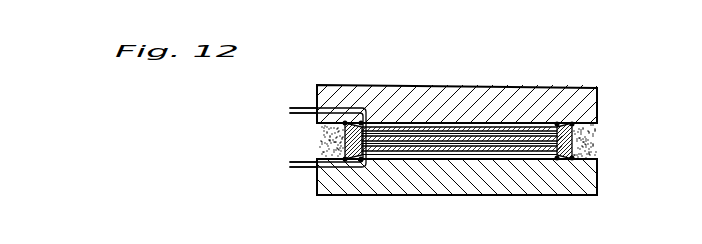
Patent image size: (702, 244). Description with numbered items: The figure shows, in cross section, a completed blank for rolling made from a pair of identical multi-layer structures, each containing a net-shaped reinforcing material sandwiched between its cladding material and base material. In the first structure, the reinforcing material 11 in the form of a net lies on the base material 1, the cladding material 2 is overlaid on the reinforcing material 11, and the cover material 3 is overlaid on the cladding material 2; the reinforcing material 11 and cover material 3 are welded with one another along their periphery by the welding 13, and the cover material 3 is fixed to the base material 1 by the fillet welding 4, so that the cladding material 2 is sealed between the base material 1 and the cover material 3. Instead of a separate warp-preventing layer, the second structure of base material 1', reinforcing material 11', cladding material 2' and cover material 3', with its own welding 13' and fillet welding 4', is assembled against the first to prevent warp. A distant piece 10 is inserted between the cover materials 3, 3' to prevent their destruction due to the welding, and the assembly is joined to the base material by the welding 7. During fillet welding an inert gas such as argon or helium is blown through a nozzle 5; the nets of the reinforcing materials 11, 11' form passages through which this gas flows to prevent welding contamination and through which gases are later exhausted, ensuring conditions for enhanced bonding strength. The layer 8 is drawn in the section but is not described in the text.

The base material 1 is at (459, 177).
The base material 1' is at (459, 89).
The cladding material 2 is at (459, 190).
The cladding material 2' is at (459, 95).
The cover material 3 is at (459, 194).
The cover material 3' is at (459, 94).
The fillet welding 4 is at (496, 177).
The fillet welding 4' is at (466, 109).
The nozzle 5 is at (290, 107).
The welding 7 is at (322, 132).
The electrode 8 is at (386, 123).
The distant piece 10 is at (345, 142).
The reinforcing material 11 is at (457, 196).
The reinforcing material 11' is at (459, 92).
The welding 13 is at (475, 193).
The welding 13' is at (472, 84).